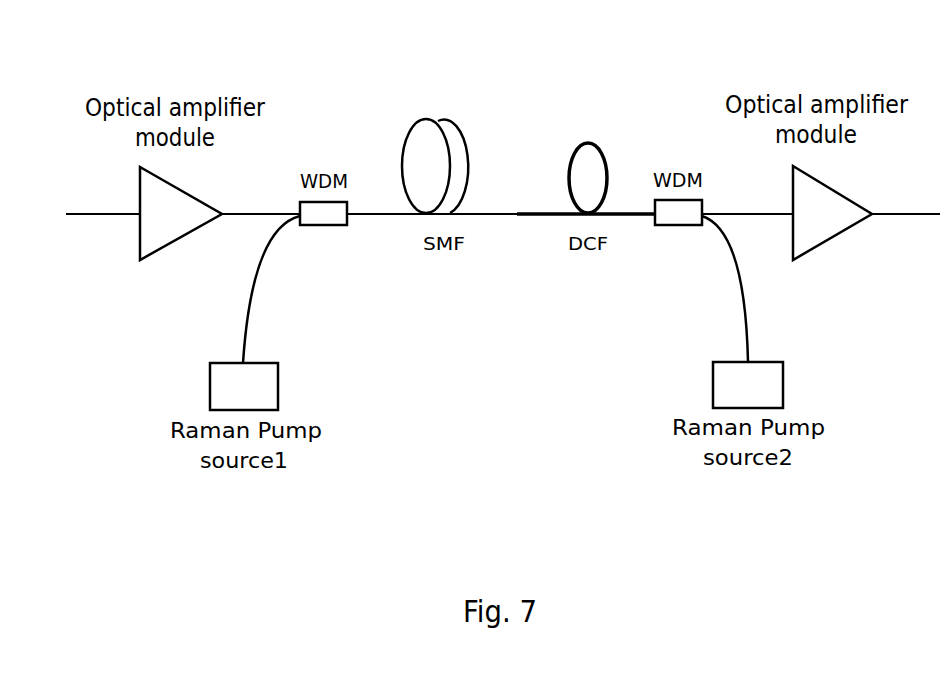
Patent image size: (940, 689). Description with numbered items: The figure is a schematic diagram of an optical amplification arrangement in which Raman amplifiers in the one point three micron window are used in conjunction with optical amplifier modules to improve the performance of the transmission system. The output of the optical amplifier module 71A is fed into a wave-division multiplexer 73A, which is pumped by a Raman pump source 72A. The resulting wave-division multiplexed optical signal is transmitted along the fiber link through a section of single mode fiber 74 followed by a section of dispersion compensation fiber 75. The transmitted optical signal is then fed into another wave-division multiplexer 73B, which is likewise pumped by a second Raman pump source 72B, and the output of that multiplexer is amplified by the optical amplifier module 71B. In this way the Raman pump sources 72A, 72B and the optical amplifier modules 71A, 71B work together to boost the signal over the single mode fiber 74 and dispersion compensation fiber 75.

The optical amplifier module 71A is at (157, 250).
The optical amplifier module 71B is at (835, 238).
The Raman pump source 72A is at (278, 373).
The Raman pump source 72B is at (713, 373).
The wave-division multiplexer 73A is at (335, 225).
The wave-division multiplexer 73B is at (677, 225).
The single mode fiber 74 is at (453, 118).
The dispersion compensation fiber 75 is at (588, 142).